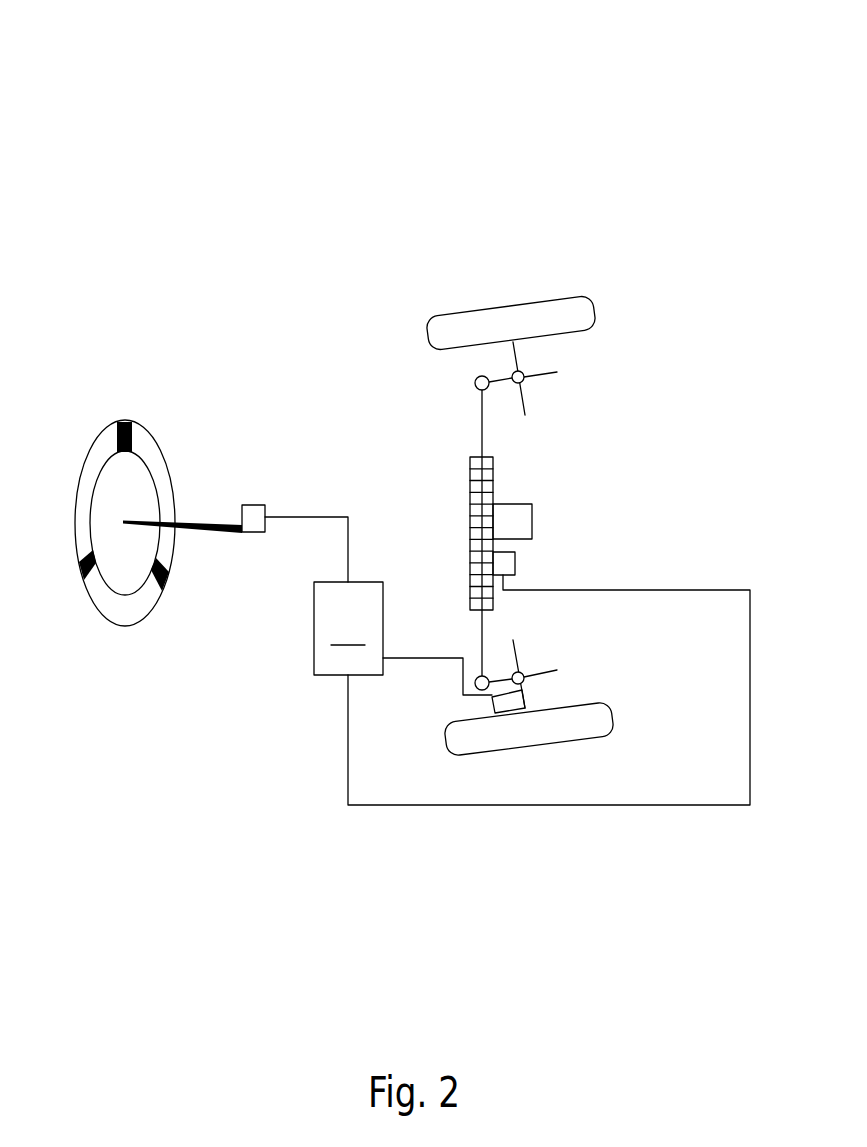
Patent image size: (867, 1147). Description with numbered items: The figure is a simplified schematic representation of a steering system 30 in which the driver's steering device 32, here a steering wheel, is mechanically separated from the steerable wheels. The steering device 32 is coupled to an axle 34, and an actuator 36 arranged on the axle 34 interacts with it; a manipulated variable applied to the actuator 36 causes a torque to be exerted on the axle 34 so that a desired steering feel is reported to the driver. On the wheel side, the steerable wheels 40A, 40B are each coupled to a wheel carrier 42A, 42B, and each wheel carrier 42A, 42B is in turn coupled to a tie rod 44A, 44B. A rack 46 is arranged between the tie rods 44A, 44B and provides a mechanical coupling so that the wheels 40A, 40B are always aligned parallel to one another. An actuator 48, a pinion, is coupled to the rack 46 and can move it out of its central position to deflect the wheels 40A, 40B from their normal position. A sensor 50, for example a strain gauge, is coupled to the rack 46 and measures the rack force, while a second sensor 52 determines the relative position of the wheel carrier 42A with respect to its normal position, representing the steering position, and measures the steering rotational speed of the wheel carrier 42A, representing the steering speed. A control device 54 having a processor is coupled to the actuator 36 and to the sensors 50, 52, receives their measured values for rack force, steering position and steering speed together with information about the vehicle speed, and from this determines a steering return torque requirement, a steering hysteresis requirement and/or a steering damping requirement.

The steering system 30 is at (656, 104).
The steering device 32 is at (112, 420).
The axle 34 is at (185, 525).
The actuator 36 is at (252, 506).
The steerable wheel 40A is at (598, 308).
The steerable wheel 40B is at (614, 722).
The wheel carrier 42A is at (530, 400).
The wheel carrier 42B is at (518, 660).
The tie rod 44A is at (543, 373).
The tie rod 44B is at (545, 675).
The rack 46 is at (470, 475).
The actuator 48 is at (522, 519).
The sensor 50 is at (507, 563).
The second sensor 52 is at (495, 700).
The control device 54 is at (532, 690).